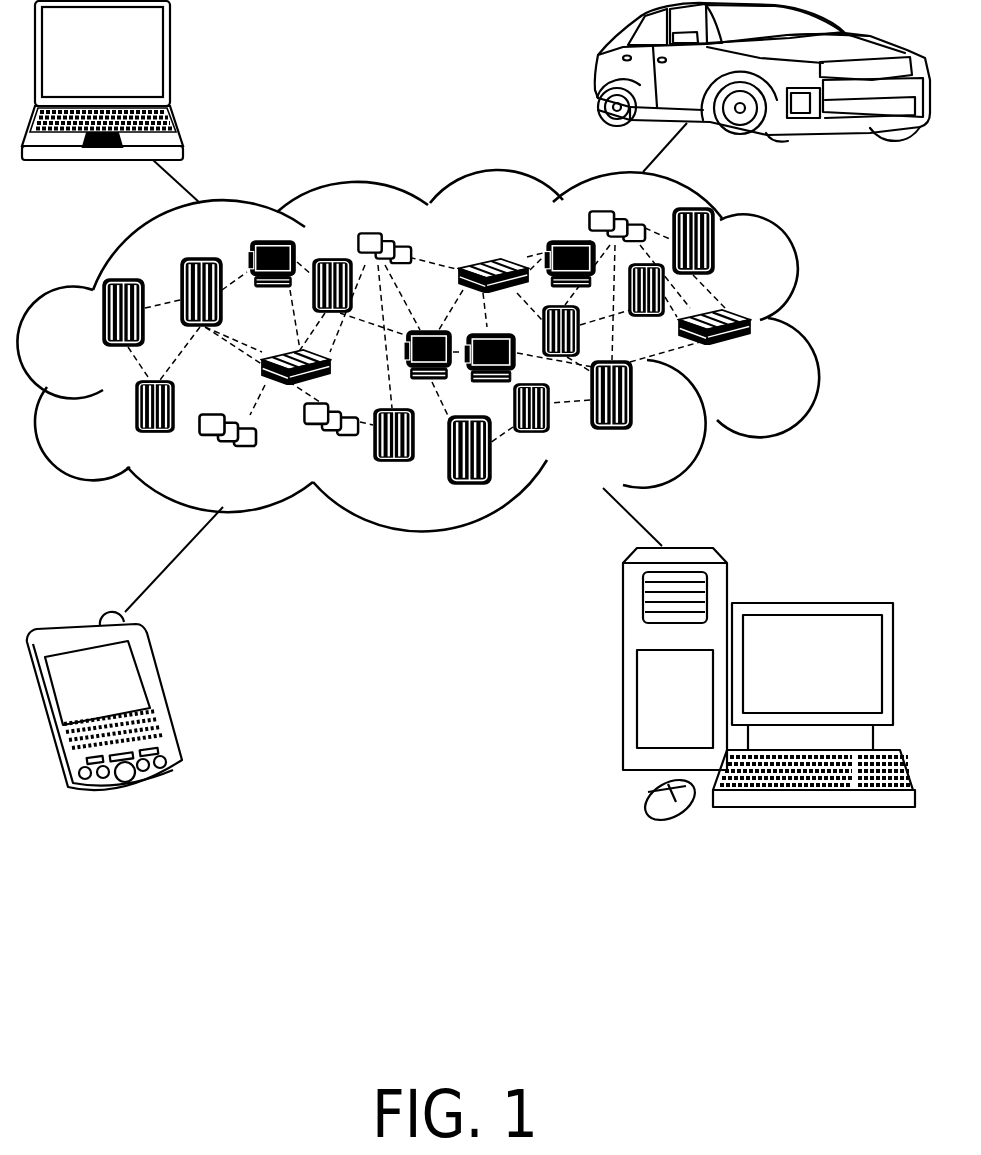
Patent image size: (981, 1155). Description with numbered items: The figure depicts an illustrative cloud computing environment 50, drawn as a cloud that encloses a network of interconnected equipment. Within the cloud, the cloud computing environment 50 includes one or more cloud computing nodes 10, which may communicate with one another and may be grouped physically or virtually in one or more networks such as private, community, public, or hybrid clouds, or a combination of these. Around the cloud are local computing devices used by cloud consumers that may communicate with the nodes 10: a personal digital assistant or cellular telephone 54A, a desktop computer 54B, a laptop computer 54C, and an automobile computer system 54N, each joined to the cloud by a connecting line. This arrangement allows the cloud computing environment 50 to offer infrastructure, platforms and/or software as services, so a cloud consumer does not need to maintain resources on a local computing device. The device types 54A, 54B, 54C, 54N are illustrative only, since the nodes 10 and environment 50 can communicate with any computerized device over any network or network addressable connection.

The cloud computing node 10 is at (772, 356).
The cloud computing environment 50 is at (810, 323).
The personal digital assistant (PDA) or cellular telephone 54A is at (160, 697).
The desktop computer 54B is at (810, 602).
The laptop computer 54C is at (171, 60).
The automobile computer system 54N is at (597, 77).